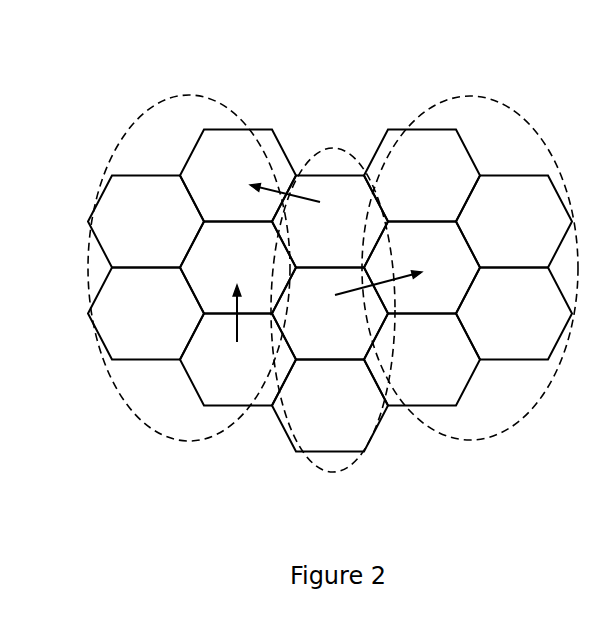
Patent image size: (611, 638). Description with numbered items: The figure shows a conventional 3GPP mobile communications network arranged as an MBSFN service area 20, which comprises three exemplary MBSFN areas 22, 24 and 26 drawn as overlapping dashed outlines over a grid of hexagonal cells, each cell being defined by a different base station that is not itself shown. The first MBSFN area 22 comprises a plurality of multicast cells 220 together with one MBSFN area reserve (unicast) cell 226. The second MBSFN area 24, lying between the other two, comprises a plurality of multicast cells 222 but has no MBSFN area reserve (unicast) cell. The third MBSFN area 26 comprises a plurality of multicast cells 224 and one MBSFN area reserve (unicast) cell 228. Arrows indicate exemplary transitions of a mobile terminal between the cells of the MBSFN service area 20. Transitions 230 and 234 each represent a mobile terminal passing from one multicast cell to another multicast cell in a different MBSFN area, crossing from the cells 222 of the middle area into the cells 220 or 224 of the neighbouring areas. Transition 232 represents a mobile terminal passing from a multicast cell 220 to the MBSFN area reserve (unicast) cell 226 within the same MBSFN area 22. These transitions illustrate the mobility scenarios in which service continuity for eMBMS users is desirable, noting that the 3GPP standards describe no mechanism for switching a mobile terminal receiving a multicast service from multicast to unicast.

The MBSFN service area 20 is at (108, 41).
The MBSFN area 22 is at (132, 131).
The MBSFN area 24 is at (337, 148).
The MBSFN area 26 is at (536, 141).
The multicast cells 220 is at (132, 217).
The multicast cells 222 is at (314, 246).
The multicast cells 224 is at (409, 174).
The MBSFN area reserve (unicast) cell 226 is at (222, 257).
The MBSFN area reserve (unicast) cell 228 is at (504, 238).
The transition 230 is at (262, 180).
The transition 232 is at (237, 319).
The transition 234 is at (412, 265).